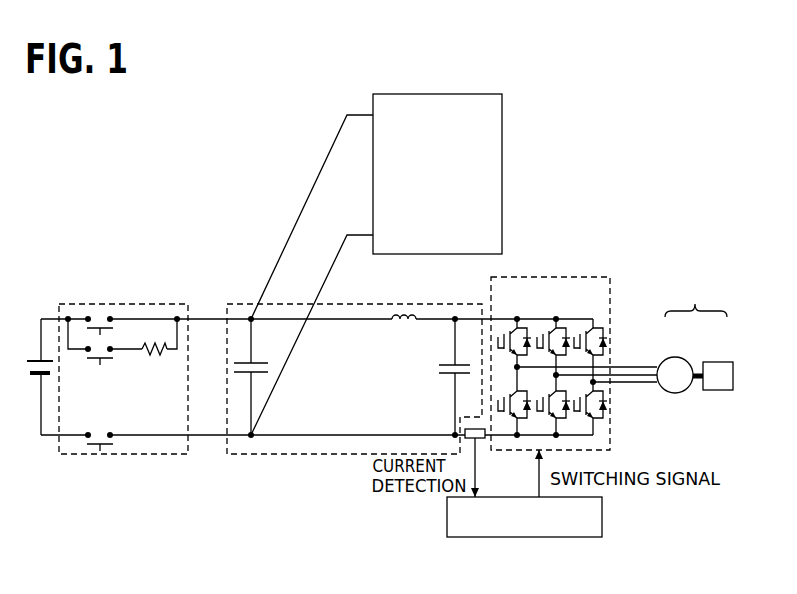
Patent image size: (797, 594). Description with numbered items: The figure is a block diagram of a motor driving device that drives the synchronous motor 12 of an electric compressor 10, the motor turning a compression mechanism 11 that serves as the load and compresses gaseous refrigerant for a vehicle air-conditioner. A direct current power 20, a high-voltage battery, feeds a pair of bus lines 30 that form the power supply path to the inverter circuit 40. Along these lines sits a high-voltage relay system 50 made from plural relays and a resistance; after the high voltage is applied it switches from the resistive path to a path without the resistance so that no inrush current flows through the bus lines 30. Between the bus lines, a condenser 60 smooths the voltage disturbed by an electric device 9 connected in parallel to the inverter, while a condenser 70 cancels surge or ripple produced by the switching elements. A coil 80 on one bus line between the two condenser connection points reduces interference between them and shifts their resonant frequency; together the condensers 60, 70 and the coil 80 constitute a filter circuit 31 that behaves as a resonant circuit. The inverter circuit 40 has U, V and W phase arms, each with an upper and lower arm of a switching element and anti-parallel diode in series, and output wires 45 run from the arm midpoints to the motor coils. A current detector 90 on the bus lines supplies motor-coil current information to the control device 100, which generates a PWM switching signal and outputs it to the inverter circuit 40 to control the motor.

The electric device 9 is at (460, 94).
The electric compressor 10 is at (695, 337).
The compression mechanism 11 is at (718, 362).
The synchronous motor 12 is at (672, 356).
The direct current power 20 is at (30, 361).
The pair of bus lines 30 is at (344, 321).
The filter circuit 31 is at (322, 455).
The inverter circuit 40 is at (587, 276).
The output wire 45 is at (622, 369).
The high-voltage relay system 50 is at (163, 303).
The condenser 60 is at (246, 361).
The condenser 70 is at (446, 368).
The coil 80 is at (403, 316).
The current detector 90 is at (485, 440).
The control device 100 is at (562, 538).